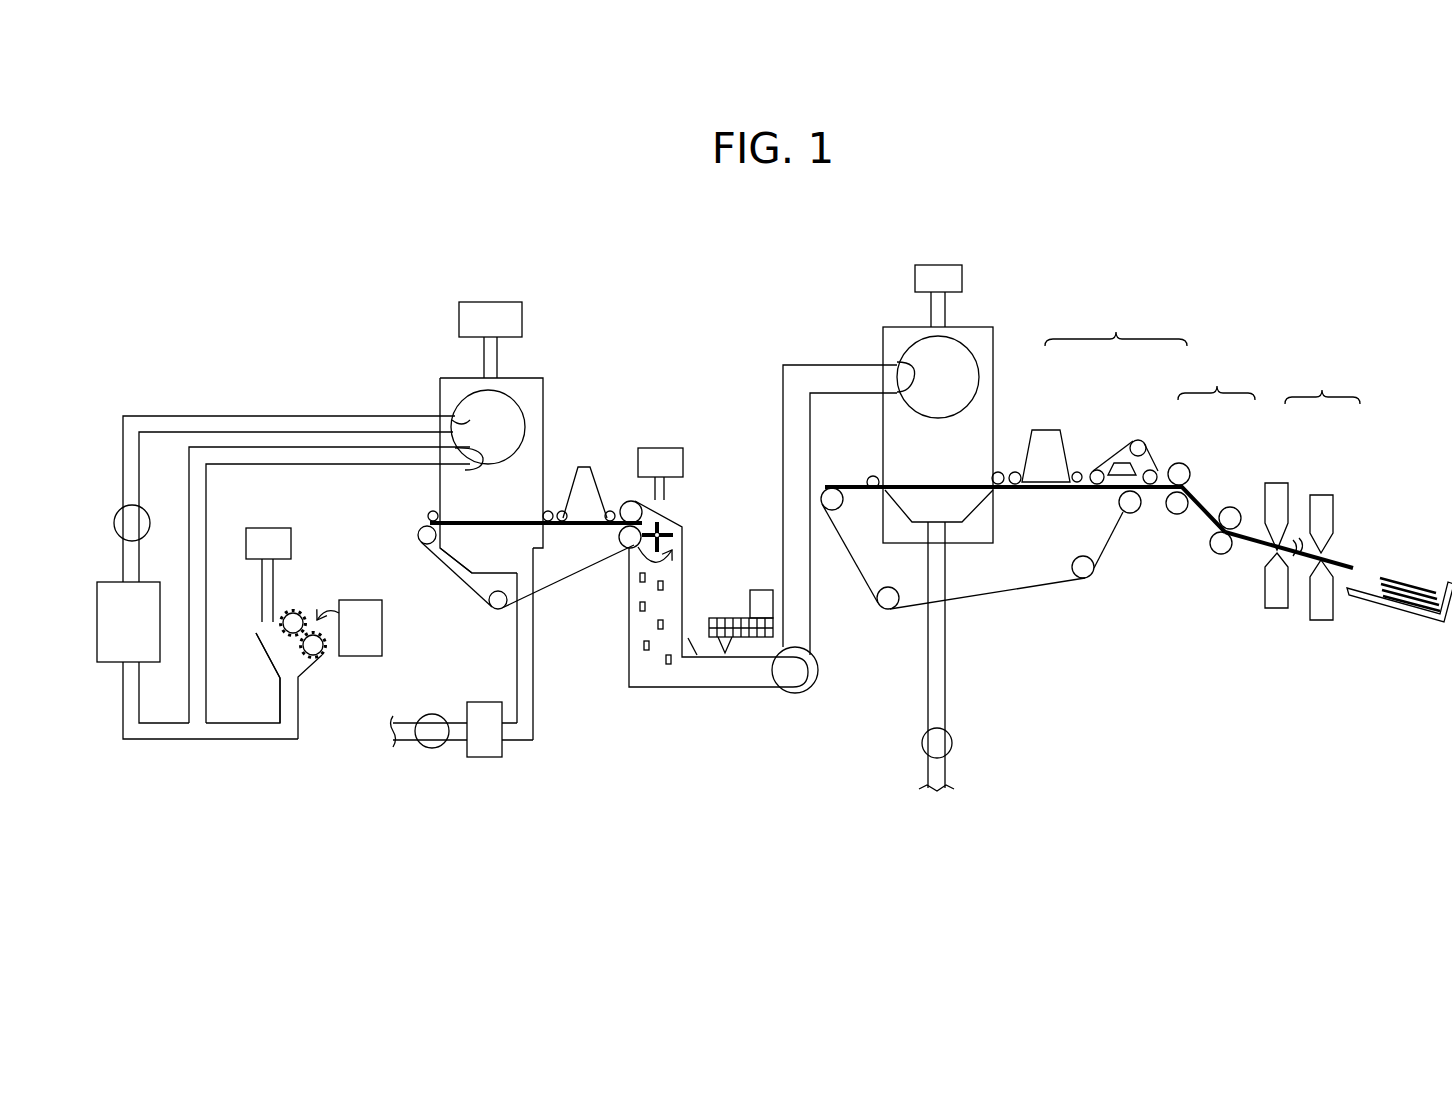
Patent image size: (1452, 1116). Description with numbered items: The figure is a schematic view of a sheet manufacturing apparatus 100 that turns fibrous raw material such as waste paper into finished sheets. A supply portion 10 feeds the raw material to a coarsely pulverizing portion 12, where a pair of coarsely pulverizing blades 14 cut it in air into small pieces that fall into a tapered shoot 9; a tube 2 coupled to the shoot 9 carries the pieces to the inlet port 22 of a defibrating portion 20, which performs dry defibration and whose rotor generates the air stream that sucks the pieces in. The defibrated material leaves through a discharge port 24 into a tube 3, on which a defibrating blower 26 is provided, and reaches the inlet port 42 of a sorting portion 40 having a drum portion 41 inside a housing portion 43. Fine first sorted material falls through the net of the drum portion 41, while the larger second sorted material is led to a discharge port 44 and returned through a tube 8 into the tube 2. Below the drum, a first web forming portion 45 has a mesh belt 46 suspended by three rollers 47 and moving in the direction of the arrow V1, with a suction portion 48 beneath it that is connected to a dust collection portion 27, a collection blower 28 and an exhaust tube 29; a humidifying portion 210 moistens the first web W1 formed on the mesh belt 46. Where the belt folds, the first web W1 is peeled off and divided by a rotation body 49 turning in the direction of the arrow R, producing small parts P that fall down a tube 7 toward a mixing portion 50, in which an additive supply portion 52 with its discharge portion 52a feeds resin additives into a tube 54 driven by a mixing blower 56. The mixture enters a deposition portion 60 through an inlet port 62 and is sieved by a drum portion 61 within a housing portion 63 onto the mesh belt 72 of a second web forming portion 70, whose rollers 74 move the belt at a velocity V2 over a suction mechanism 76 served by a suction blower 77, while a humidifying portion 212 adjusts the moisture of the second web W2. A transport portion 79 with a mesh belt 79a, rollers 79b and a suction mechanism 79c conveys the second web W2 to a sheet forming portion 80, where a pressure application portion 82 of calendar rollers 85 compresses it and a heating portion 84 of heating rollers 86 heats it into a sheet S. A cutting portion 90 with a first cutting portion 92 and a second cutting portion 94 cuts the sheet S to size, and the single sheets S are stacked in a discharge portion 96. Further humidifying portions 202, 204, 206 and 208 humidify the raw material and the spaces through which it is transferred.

The sheet manufacturing apparatus 100 is at (1210, 257).
The tube 2 is at (248, 733).
The tube 3 is at (150, 423).
The tube 7 is at (662, 607).
The tube 8 is at (310, 452).
The shoot 9 is at (262, 650).
The supply portion 10 is at (363, 667).
The coarsely pulverizing portion 12 is at (255, 632).
The coarsely pulverizing blades 14 is at (303, 610).
The defibrating portion 20 is at (189, 616).
The inlet port 22 is at (137, 657).
The discharge port 24 is at (146, 590).
The defibrating blower 26 is at (146, 512).
The dust collection portion 27 is at (480, 758).
The collection blower 28 is at (433, 750).
The tube 29 is at (413, 723).
The sorting portion 40 is at (539, 463).
The drum portion 41 is at (527, 418).
The inlet port 42 is at (470, 420).
The housing portion 43 is at (543, 395).
The discharge port 44 is at (455, 478).
The first web forming portion 45 is at (577, 611).
The mesh belt 46 is at (553, 589).
The rollers 47 is at (418, 541).
The suction portion 48 is at (470, 555).
The rotation body 49 is at (676, 525).
The mixing portion 50 is at (758, 567).
The additive supply portion 52 is at (760, 597).
The discharge portion 52a is at (725, 654).
The tube 54 is at (712, 672).
The mixing blower 56 is at (808, 664).
The deposition portion 60 is at (975, 374).
The drum portion 61 is at (972, 350).
The inlet port 62 is at (910, 360).
The housing portion 63 is at (977, 323).
The second web forming portion 70 is at (1023, 605).
The mesh belt 72 is at (850, 483).
The rollers 74 is at (830, 511).
The suction mechanism 76 is at (943, 523).
The suction blower 77 is at (953, 744).
The transport portion 79 is at (1114, 390).
The mesh belt 79a is at (1106, 461).
The rollers 79b is at (1140, 439).
The suction mechanism 79c is at (1118, 462).
The sheet forming portion 80 is at (1205, 484).
The pressure application portion 82 is at (1184, 453).
The heating portion 84 is at (1231, 506).
The calendar rollers 85 is at (1177, 514).
The heating rollers 86 is at (1218, 554).
The cutting portion 90 is at (1312, 490).
The first cutting portion 92 is at (1278, 475).
The second cutting portion 94 is at (1323, 487).
The discharge portion 96 is at (1408, 613).
The humidifying portion 202 is at (268, 527).
The humidifying portion 204 is at (490, 300).
The humidifying portion 206 is at (660, 458).
The humidifying portion 208 is at (943, 272).
The humidifying portion 210 is at (588, 470).
The humidifying portion 212 is at (1045, 440).
The small parts P is at (647, 652).
The arrow R is at (683, 563).
The sheet S is at (1255, 543).
The conveying speed V1 is at (463, 512).
The predetermined velocity V2 is at (907, 473).
The first web W1 is at (553, 528).
The second web W2 is at (1087, 492).